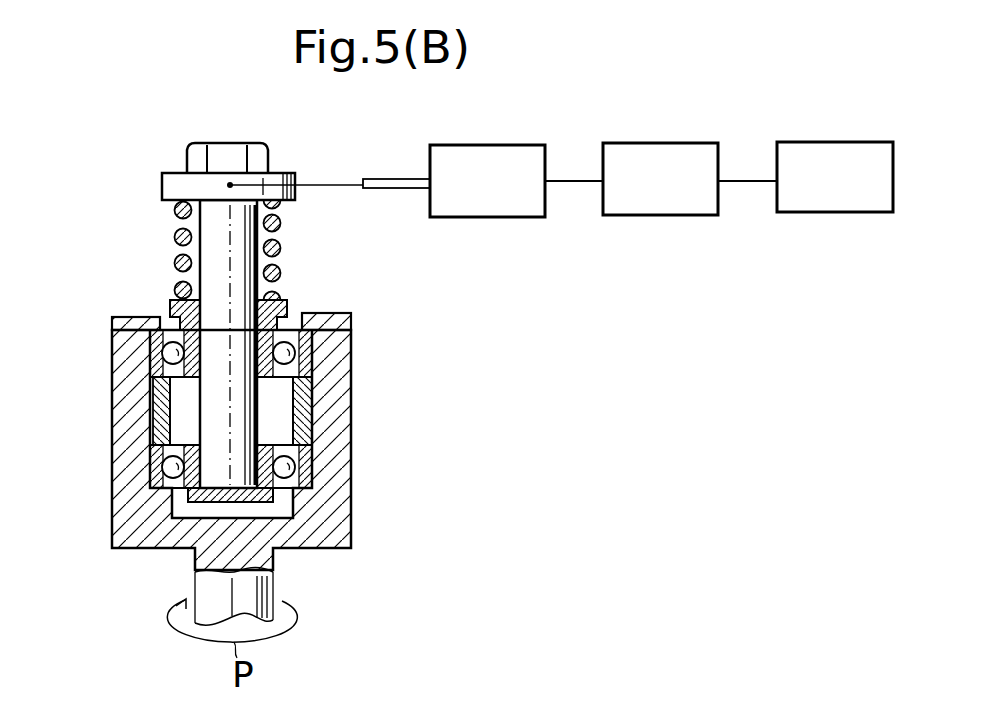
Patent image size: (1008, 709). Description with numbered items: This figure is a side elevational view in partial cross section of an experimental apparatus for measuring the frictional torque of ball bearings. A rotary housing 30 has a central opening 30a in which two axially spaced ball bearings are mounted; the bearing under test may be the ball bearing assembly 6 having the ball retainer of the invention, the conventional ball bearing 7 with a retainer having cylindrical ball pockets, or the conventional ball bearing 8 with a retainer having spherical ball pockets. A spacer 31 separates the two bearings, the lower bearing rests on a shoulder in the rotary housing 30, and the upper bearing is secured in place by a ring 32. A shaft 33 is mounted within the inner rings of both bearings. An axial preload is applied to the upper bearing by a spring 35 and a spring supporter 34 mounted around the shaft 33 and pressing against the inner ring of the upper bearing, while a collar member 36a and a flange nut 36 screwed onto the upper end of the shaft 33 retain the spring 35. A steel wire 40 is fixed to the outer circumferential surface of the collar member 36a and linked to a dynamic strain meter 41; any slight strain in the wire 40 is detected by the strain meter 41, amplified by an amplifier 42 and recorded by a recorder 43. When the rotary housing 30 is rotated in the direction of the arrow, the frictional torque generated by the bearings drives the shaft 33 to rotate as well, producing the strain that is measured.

The ball bearing assembly 6 is at (348, 410).
The conventional ball bearing 7 is at (231, 353).
The conventional ball bearing 8 is at (300, 357).
The rotary housing 30 is at (128, 484).
The bore of housing 30a is at (185, 427).
The spacer 31 is at (305, 408).
The ring 32 is at (332, 318).
The shaft 33 is at (217, 397).
The spring supporter 34 is at (170, 312).
The spring 35 is at (175, 242).
The flange nut 36 is at (267, 155).
The collar member 36a is at (162, 190).
The steel wire 40 is at (333, 186).
The dynamic strain meter 41 is at (482, 153).
The amplifier 42 is at (660, 153).
The recorder 43 is at (832, 153).